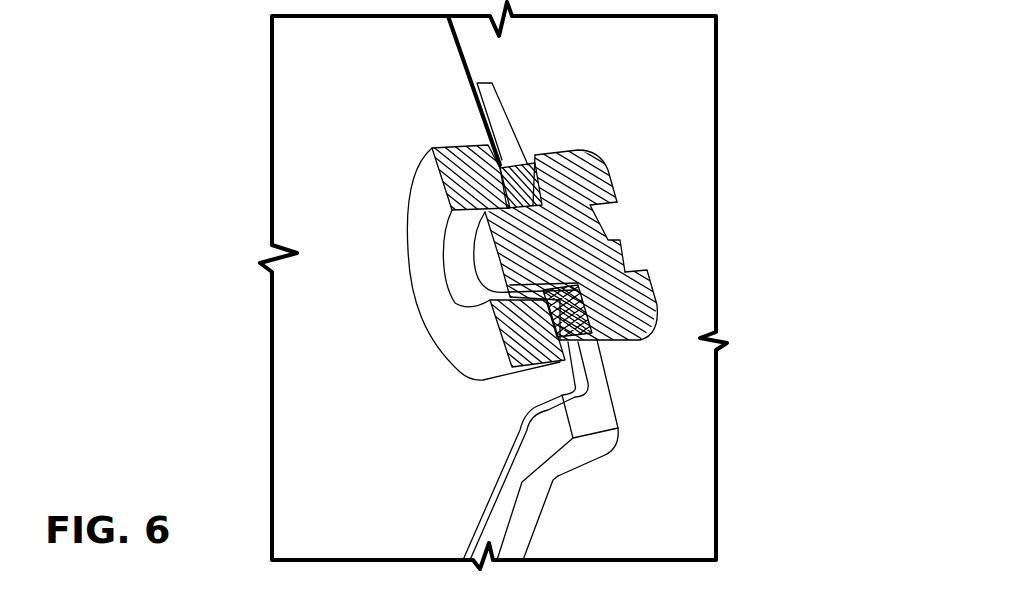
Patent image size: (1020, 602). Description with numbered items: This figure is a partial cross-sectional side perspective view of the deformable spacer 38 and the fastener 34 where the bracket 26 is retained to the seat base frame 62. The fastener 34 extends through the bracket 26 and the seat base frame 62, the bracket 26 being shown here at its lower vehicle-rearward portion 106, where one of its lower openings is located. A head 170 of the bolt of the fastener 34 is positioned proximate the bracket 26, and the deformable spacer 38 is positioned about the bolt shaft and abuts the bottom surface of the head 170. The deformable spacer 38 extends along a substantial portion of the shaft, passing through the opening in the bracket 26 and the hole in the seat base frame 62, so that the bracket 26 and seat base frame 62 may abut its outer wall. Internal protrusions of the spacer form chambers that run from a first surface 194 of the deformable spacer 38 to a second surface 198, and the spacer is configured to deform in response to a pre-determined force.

The bracket 26 is at (595, 447).
The fastener 34 is at (665, 263).
The deformable spacer 38 is at (513, 165).
The seat base frame 62 is at (455, 440).
The lower vehicle-rearward portion 106 is at (427, 183).
The head 170 is at (590, 183).
The first surface 194 is at (660, 307).
The second surface 198 is at (596, 336).